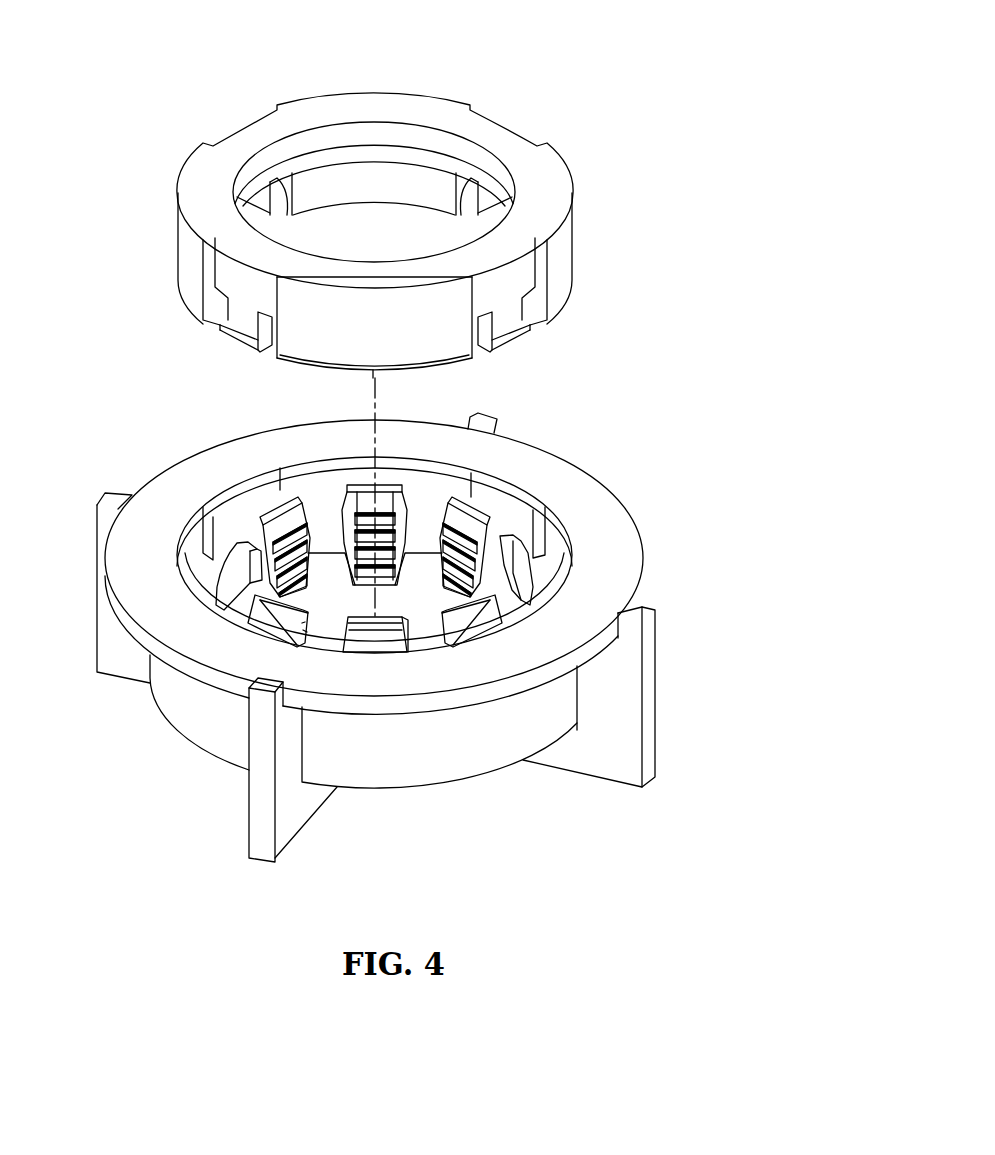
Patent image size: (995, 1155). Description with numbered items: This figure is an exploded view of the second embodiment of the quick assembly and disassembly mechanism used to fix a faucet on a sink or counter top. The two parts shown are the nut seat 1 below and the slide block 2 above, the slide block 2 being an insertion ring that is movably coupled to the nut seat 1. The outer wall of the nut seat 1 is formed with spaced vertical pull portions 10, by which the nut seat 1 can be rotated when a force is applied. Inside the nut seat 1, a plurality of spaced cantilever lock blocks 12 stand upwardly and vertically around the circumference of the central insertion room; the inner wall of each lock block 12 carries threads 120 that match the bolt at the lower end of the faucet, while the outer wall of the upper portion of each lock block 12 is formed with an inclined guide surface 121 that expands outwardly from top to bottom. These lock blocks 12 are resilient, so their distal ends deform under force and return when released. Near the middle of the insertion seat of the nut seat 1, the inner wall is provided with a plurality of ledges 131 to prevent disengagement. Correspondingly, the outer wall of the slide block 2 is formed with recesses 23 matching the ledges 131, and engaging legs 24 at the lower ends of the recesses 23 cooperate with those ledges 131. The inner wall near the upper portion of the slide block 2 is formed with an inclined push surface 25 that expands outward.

The nut seat 1 is at (422, 615).
The pull portions 10 is at (624, 712).
The cantilever lock blocks 12 is at (466, 510).
The threads 120 is at (488, 527).
The inclined guide surface 121 is at (500, 537).
The ledges 131 is at (537, 547).
The slide block 2 is at (368, 187).
The recesses 23 is at (505, 124).
The engaging legs 24 is at (233, 336).
The inclined push surface 25 is at (385, 152).